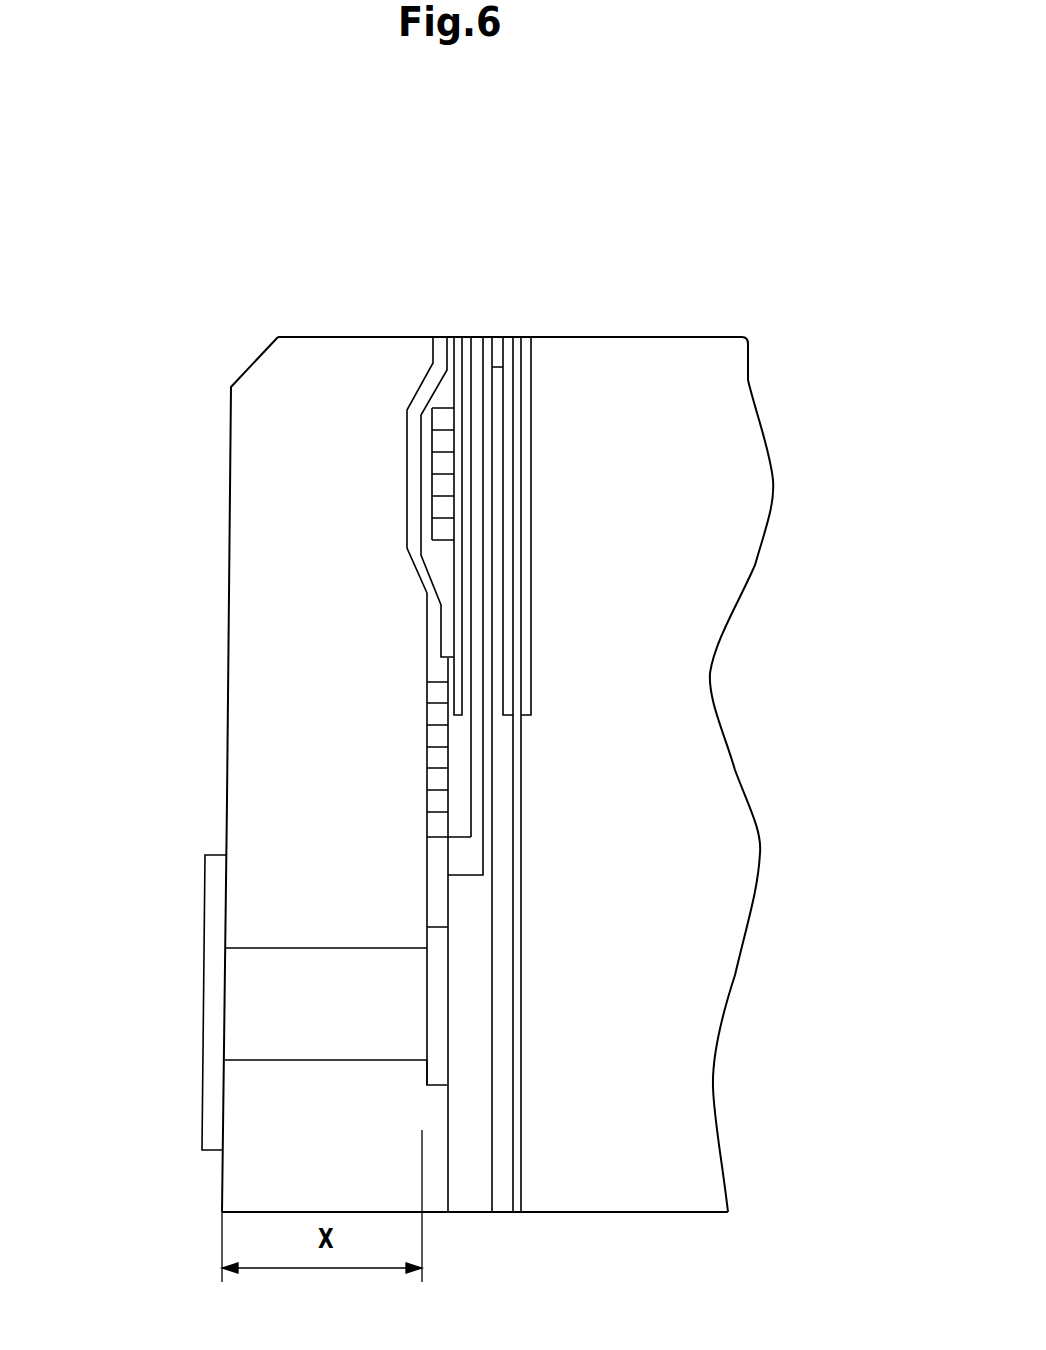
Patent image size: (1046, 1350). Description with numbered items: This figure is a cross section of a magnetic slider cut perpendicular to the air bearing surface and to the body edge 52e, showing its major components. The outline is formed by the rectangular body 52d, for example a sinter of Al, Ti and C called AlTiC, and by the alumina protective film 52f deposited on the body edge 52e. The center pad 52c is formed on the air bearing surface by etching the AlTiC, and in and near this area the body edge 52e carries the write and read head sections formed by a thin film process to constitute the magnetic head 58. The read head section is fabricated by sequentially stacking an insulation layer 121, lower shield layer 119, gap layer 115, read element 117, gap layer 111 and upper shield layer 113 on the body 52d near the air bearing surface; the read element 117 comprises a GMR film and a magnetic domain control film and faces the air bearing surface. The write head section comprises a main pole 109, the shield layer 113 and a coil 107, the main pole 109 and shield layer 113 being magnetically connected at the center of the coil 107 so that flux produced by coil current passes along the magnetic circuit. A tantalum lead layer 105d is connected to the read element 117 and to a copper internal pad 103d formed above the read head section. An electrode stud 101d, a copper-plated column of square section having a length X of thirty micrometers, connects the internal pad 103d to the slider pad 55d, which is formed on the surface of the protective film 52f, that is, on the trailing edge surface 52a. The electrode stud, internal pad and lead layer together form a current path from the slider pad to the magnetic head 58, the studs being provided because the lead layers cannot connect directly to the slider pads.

The trailing edge surface 52a is at (228, 771).
The center pad 52c is at (292, 337).
The body 52d is at (638, 504).
The body edge 52e is at (508, 1138).
The protective film 52f is at (303, 559).
The slider pad 55d is at (204, 1032).
The magnetic head 58 is at (514, 251).
The electrode stud 101d is at (350, 1009).
The internal pad 103d is at (425, 1092).
The lead layer 105d is at (425, 872).
The coil 107 is at (430, 512).
The main pole 109 is at (406, 412).
The gap layer 111 is at (472, 337).
The upper shield layer 113 is at (457, 337).
The gap layer 115 is at (509, 337).
The read element 117 is at (494, 337).
The lower shield layer 119 is at (518, 337).
The insulation layer 121 is at (533, 337).